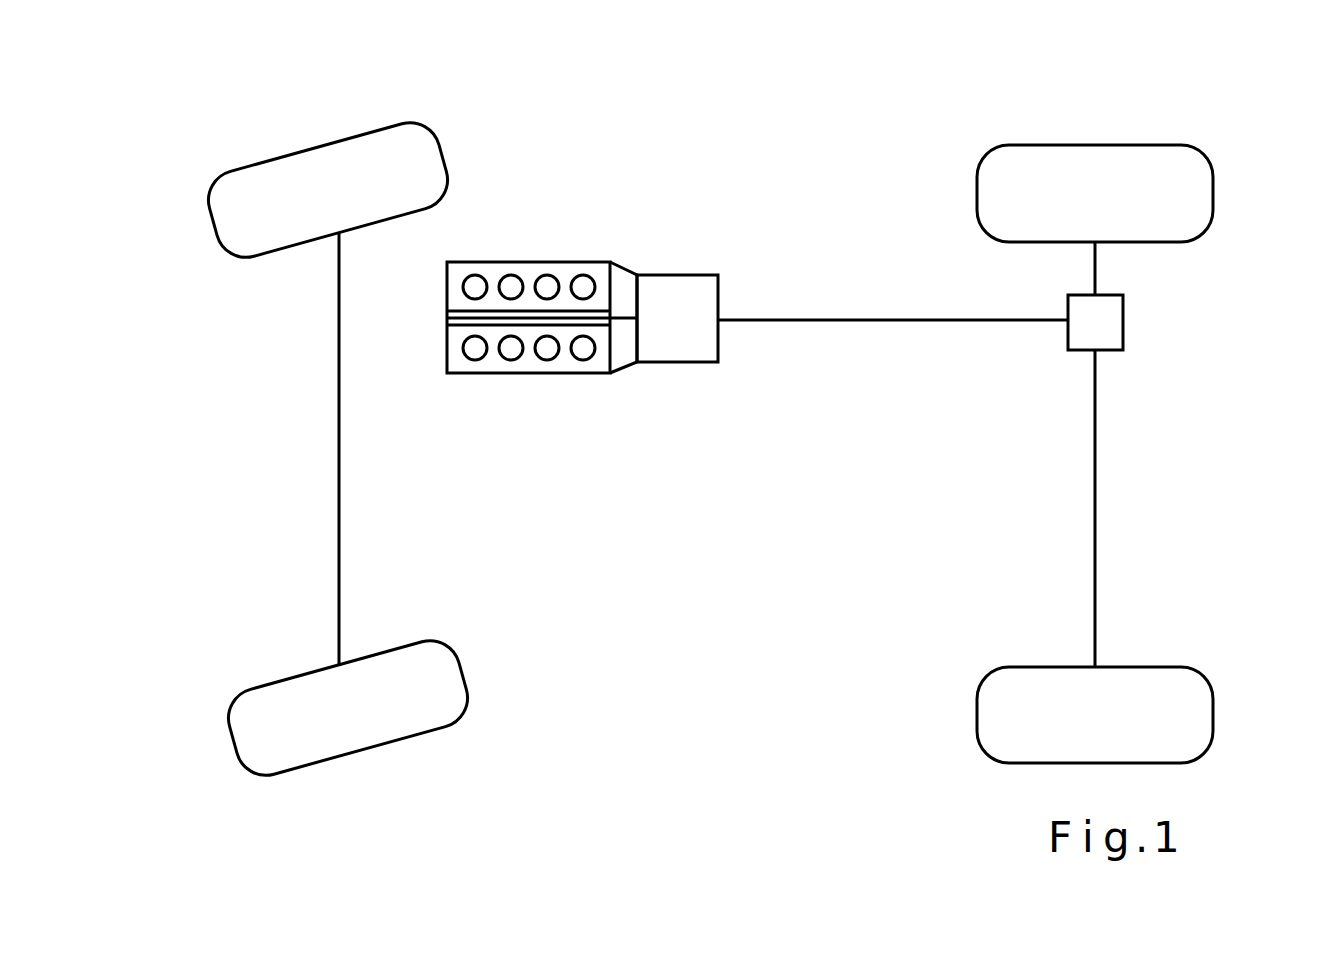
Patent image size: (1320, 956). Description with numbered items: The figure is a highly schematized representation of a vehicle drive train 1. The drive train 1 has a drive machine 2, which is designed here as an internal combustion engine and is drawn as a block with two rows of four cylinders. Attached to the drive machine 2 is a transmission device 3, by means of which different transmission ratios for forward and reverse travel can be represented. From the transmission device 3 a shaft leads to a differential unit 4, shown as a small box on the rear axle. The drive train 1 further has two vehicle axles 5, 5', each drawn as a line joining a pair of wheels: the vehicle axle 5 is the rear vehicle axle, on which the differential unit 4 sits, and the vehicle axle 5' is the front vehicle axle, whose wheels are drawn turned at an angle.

The vehicle drive train 1 is at (1145, 295).
The drive machine 2 is at (494, 293).
The transmission device 3 is at (687, 322).
The differential unit 4 is at (1088, 321).
The vehicle axle 5 is at (1122, 556).
The vehicle axle 5' is at (291, 449).